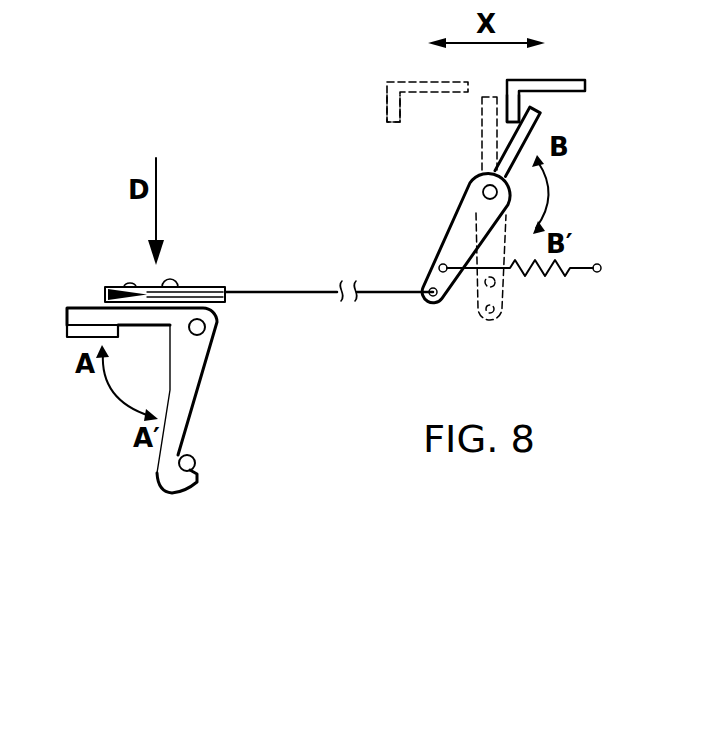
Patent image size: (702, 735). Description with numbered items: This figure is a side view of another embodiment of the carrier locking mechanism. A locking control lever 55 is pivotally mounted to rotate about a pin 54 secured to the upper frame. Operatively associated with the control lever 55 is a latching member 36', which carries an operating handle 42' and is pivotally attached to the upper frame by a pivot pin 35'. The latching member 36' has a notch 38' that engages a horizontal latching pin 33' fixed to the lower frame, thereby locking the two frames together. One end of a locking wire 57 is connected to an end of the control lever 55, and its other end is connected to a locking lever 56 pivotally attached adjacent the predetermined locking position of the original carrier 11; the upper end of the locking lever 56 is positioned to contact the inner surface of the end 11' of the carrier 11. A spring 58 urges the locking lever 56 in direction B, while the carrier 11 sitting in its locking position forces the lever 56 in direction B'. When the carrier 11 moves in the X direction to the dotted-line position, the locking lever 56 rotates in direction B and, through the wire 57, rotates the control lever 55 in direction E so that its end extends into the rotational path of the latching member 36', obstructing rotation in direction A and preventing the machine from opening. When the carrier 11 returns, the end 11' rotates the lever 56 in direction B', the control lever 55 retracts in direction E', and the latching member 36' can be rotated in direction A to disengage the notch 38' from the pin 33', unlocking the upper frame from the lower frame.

The original carrier 11 is at (482, 72).
The end of carrier 11' is at (497, 116).
The latching pin 33' is at (217, 449).
The pivot pin 35' is at (227, 354).
The latching member 36' is at (116, 368).
The notch 38' is at (203, 503).
The operating handle 42' is at (63, 354).
The pin 54 is at (168, 280).
The locking control lever 55 is at (213, 285).
The locking lever 56 is at (455, 228).
The locking wire 57 is at (287, 293).
The spring 58 is at (533, 277).